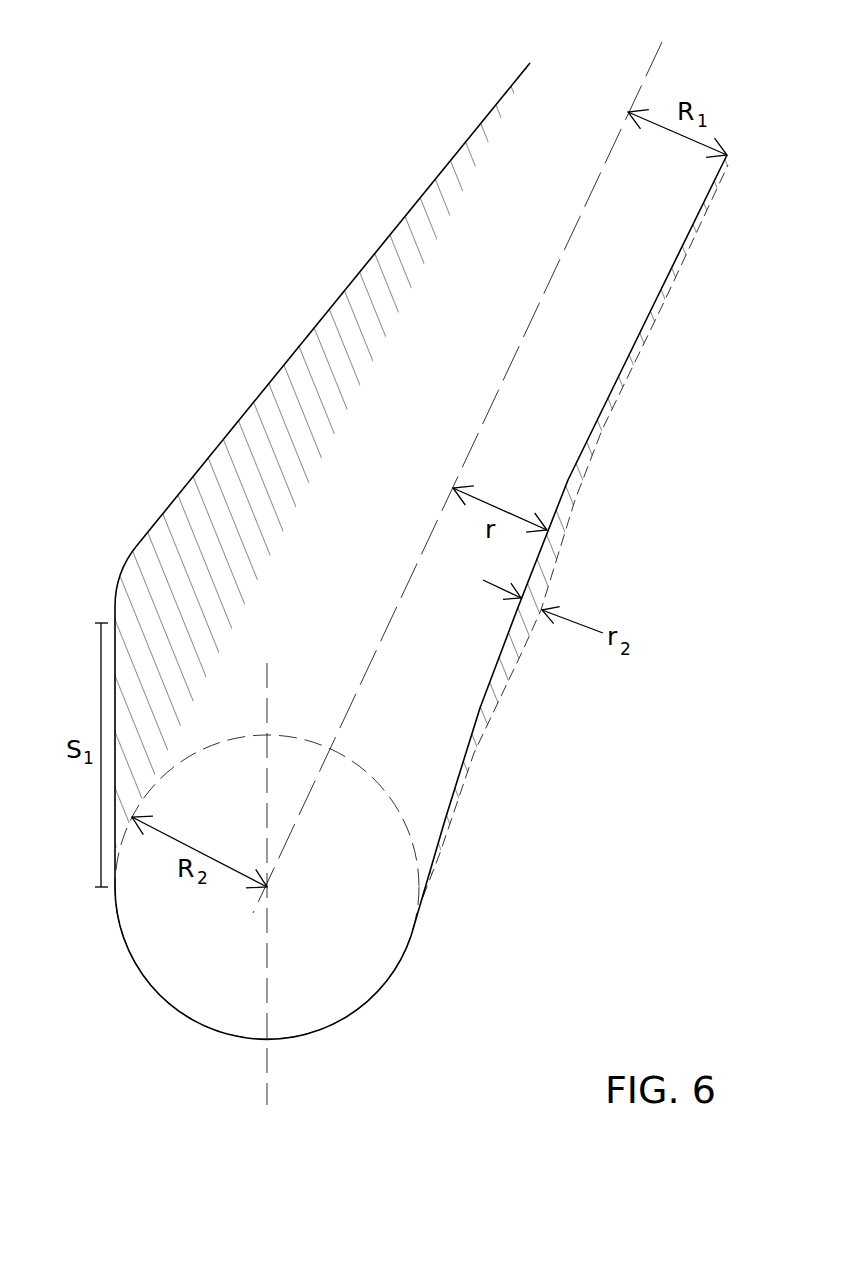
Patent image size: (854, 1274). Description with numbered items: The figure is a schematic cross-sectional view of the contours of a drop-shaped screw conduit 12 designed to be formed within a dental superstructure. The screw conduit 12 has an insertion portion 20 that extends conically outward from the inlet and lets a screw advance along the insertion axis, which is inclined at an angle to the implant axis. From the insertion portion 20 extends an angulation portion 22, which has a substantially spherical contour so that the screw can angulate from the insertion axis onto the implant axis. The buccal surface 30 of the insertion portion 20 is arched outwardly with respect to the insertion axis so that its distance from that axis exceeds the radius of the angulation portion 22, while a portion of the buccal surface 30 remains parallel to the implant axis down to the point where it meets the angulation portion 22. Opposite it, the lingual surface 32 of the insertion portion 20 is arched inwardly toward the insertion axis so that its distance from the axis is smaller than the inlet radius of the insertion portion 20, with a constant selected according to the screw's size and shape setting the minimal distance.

The drop-shaped screw conduit 12 is at (623, 589).
The insertion portion 20 is at (432, 183).
The angulation portion 22 is at (137, 962).
The buccal surface 30 is at (172, 500).
The lingual surface 32 is at (502, 648).